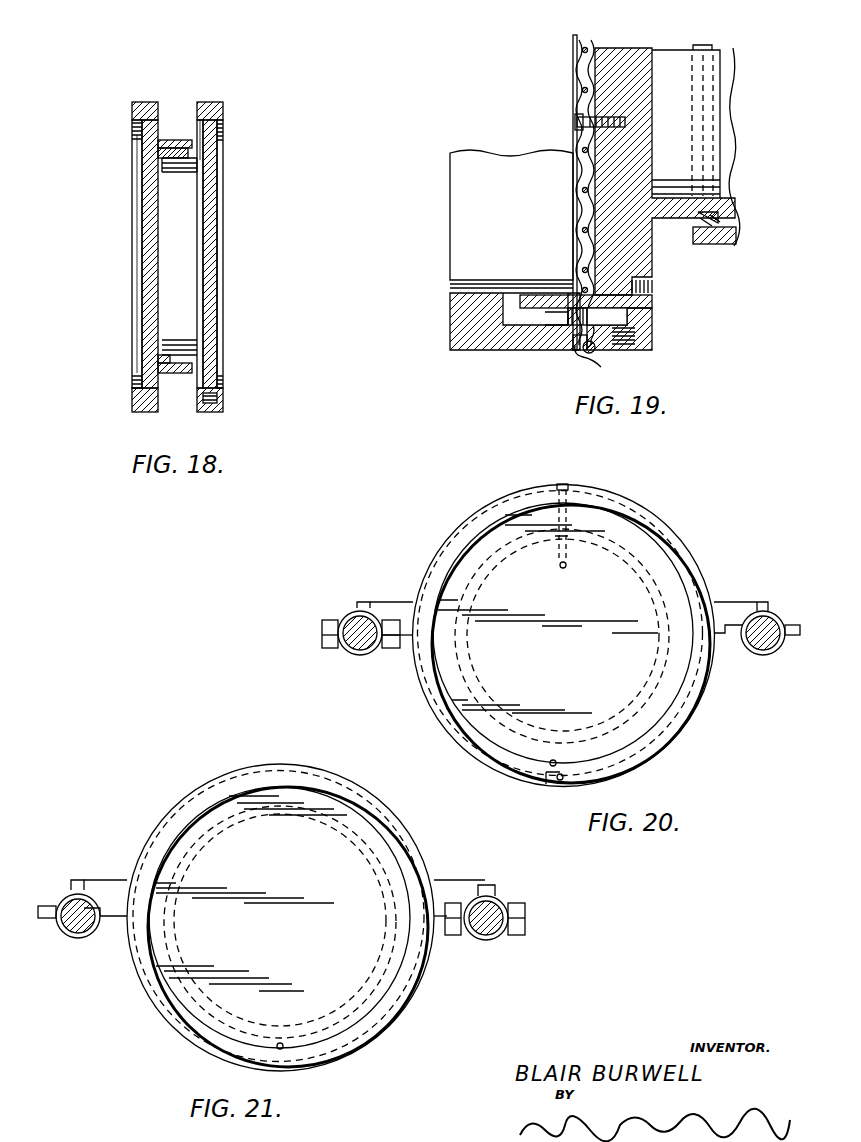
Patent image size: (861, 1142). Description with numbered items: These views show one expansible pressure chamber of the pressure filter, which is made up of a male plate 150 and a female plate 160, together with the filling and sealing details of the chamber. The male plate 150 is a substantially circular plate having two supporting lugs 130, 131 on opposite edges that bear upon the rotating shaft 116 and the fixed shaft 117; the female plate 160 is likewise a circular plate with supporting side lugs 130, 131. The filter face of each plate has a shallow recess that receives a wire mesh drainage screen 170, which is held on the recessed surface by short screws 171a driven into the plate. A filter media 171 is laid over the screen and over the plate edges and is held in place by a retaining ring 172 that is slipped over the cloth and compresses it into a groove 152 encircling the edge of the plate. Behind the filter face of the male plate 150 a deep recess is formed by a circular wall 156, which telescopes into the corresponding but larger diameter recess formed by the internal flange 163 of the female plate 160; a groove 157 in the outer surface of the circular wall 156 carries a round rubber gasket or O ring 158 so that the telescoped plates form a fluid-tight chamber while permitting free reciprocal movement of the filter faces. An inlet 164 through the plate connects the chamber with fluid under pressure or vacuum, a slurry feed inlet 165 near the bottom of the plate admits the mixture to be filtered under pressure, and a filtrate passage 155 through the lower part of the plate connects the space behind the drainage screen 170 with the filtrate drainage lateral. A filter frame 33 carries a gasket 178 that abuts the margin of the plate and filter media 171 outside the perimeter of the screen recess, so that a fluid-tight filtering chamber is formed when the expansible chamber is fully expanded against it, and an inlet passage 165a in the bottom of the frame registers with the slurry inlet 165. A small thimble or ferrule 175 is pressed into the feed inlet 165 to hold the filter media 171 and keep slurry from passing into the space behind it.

In FIG. 19, the filter frame 33 is at (511, 219).
In FIG. 20, the rotating shaft 116 is at (756, 650).
In FIG. 21, the rotating shaft 116 is at (69, 939).
In FIG. 20, the fixed shaft 117 is at (353, 648).
In FIG. 21, the fixed shaft 117 is at (491, 935).
In FIG. 20, the supporting lug 130 is at (757, 627).
In FIG. 21, the supporting lug 130 is at (82, 908).
In FIG. 20, the supporting lug 131 is at (359, 635).
In FIG. 21, the supporting lug 131 is at (496, 922).
In FIG. 18, the male plate 150 is at (206, 225).
In FIG. 19, the male plate 150 is at (618, 60).
In FIG. 20, the male plate 150 is at (473, 528).
In FIG. 18, the groove 152 is at (134, 103).
In FIG. 20, the groove 152 is at (508, 492).
In FIG. 21, the groove 152 is at (218, 783).
In FIG. 18, the filtrate passage 155 is at (150, 385).
In FIG. 19, the filtrate passage 155 is at (625, 300).
In FIG. 20, the filtrate passage 155 is at (556, 762).
In FIG. 21, the filtrate passage 155 is at (281, 1043).
In FIG. 18, the circular wall 156 is at (168, 165).
In FIG. 19, the circular wall 156 is at (712, 206).
In FIG. 20, the circular wall 156 is at (650, 570).
In FIG. 18, the groove 157 is at (165, 152).
In FIG. 19, the groove 157 is at (688, 222).
In FIG. 19, the O ring 158 is at (716, 242).
In FIG. 18, the female plate 160 is at (150, 231).
In FIG. 21, the female plate 160 is at (182, 822).
In FIG. 18, the internal flange 163 is at (172, 140).
In FIG. 19, the internal flange 163 is at (737, 235).
In FIG. 21, the internal flange 163 is at (372, 847).
In FIG. 18, the inlet 164 is at (198, 148).
In FIG. 20, the inlet 164 is at (570, 511).
In FIG. 18, the slurry feed inlet 165 is at (216, 401).
In FIG. 19, the slurry feed inlet 165 is at (625, 332).
In FIG. 20, the slurry feed inlet 165 is at (546, 784).
In FIG. 19, the inlet passage 165a is at (530, 320).
In FIG. 19, the wire mesh drainage screen 170 is at (584, 76).
In FIG. 19, the filter media 171 is at (573, 37).
In FIG. 19, the short screws 171a is at (575, 121).
In FIG. 19, the retaining ring 172 is at (575, 340).
In FIG. 19, the thimble or ferrule 175 is at (550, 335).
In FIG. 19, the gasket 178 is at (575, 358).